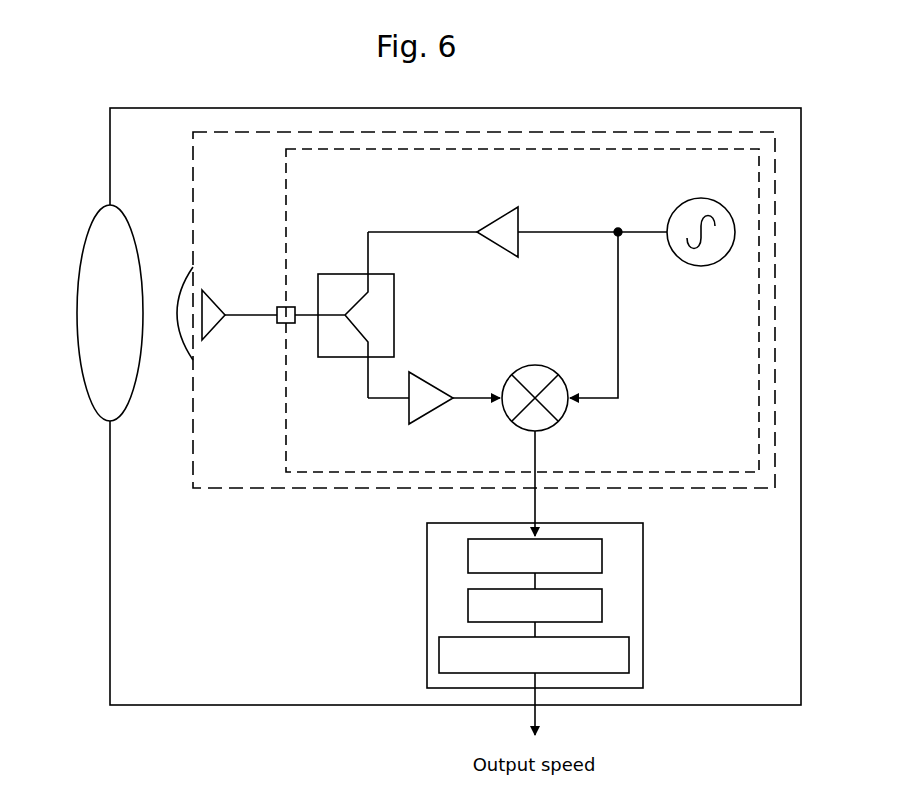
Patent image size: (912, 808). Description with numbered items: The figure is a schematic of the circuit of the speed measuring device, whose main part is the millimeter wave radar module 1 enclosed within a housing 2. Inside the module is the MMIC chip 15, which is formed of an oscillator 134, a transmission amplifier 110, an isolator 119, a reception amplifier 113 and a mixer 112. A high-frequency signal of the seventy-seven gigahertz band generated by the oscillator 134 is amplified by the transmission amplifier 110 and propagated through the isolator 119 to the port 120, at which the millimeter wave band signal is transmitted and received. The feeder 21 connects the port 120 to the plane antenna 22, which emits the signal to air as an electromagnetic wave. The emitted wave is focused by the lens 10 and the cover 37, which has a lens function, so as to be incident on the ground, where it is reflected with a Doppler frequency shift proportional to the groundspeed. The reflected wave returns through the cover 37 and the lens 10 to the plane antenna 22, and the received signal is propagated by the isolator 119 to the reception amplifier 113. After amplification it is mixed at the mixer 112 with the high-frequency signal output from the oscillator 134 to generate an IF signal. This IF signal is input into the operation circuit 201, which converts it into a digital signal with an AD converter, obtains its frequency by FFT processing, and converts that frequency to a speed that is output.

The millimeter wave radar module 1 is at (683, 490).
The housing 2 is at (110, 597).
The lens 10 is at (185, 358).
The MMIC chip 15 is at (302, 473).
The feeder 21 is at (257, 320).
The plane antenna 22 is at (210, 290).
The cover 37 is at (95, 412).
The transmission amplifier 110 is at (487, 218).
The mixer 112 is at (535, 365).
The reception amplifier 113 is at (428, 380).
The isolator 119 is at (345, 365).
The port 120 is at (282, 303).
The oscillator 134 is at (702, 273).
The operation circuit 201 is at (423, 627).